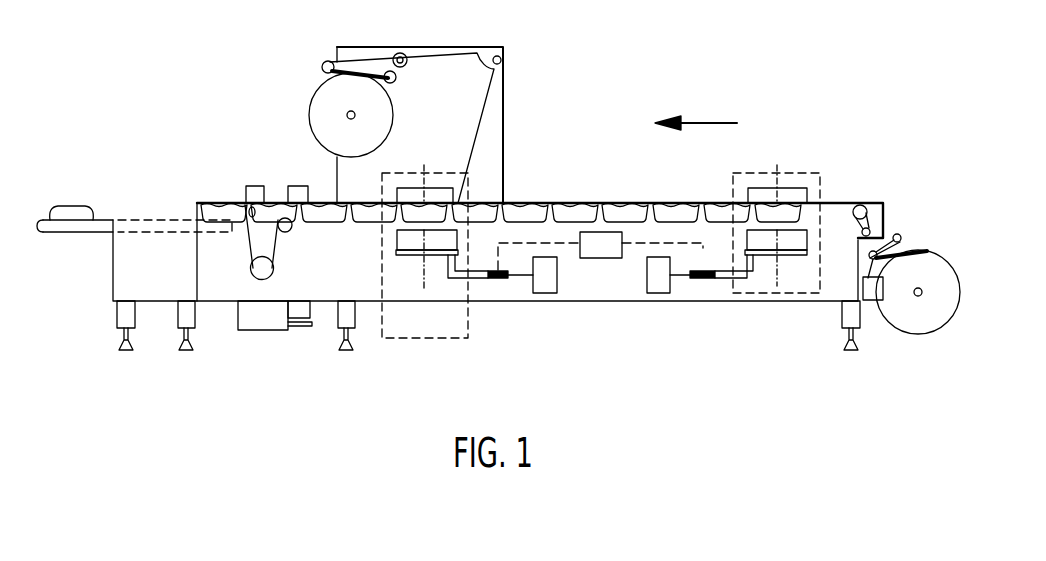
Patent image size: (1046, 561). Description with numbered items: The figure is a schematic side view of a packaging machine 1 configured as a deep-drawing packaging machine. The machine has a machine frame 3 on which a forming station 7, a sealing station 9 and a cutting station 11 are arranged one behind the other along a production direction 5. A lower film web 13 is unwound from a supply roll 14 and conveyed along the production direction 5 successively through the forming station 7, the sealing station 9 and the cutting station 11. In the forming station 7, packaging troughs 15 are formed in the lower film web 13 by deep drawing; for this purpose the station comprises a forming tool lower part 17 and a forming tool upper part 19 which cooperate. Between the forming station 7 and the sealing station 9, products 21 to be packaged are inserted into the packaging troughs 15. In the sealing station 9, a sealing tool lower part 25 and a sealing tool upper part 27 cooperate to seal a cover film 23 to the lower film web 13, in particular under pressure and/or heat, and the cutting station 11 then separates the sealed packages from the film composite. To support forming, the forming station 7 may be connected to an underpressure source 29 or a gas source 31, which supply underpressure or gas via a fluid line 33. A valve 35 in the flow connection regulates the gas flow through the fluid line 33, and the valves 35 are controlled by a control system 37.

The packaging machine 1 is at (622, 63).
The machine frame 3 is at (838, 292).
The production direction 5 is at (707, 121).
The forming station 7 is at (782, 232).
The sealing station 9 is at (425, 241).
The cutting station 11 is at (249, 166).
The lower film web 13 is at (883, 212).
The supply roll 14 is at (920, 318).
The packaging troughs 15 is at (713, 223).
The forming tool lower part 17 is at (797, 256).
The forming tool upper part 19 is at (758, 188).
The products 21 is at (668, 206).
The cover film 23 is at (483, 125).
The sealing tool lower part 25 is at (407, 256).
The sealing tool upper part 27 is at (408, 192).
The underpressure source 29 is at (602, 306).
The gas source 31 is at (545, 294).
The fluid line 33 is at (443, 256).
The valve 35 is at (488, 280).
The control system 37 is at (605, 259).